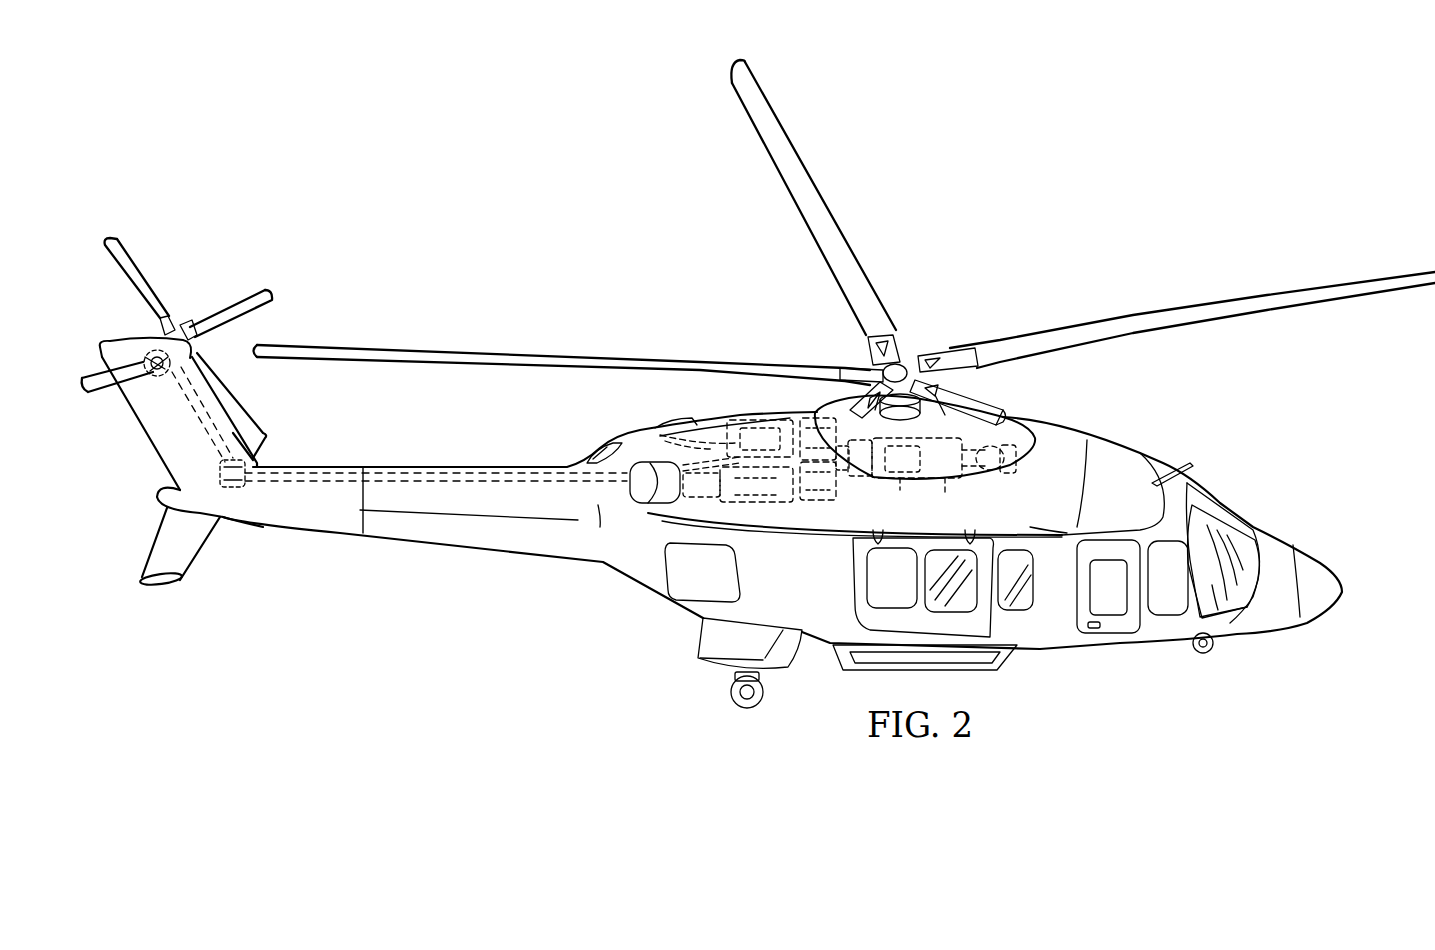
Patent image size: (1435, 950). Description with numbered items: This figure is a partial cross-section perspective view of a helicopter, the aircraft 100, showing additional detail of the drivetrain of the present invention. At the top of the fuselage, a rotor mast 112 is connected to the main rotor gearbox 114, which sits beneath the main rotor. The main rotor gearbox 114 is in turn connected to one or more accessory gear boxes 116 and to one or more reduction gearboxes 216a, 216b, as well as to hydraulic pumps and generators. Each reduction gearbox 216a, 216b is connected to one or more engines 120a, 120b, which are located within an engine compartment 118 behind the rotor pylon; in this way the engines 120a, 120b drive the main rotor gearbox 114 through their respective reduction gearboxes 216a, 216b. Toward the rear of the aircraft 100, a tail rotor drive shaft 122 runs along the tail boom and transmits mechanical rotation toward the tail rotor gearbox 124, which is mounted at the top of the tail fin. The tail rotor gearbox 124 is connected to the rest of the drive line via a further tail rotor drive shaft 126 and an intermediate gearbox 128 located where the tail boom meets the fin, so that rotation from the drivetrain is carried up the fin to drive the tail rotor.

The aircraft 100 is at (1131, 108).
The rotor mast 112 is at (857, 467).
The main rotor gearbox 114 is at (920, 447).
The accessory gear box 116 is at (993, 467).
The engine compartment 118 is at (785, 413).
The engine 120a is at (755, 493).
The engine 120b is at (760, 413).
The tail rotor drive shaft 122 is at (447, 470).
The tail rotor gearbox 124 is at (150, 340).
The tail rotor drive shaft 126 is at (218, 405).
The intermediate gearbox 128 is at (237, 493).
The reduction gearbox 216a is at (805, 493).
The reduction gearbox 216b is at (807, 417).